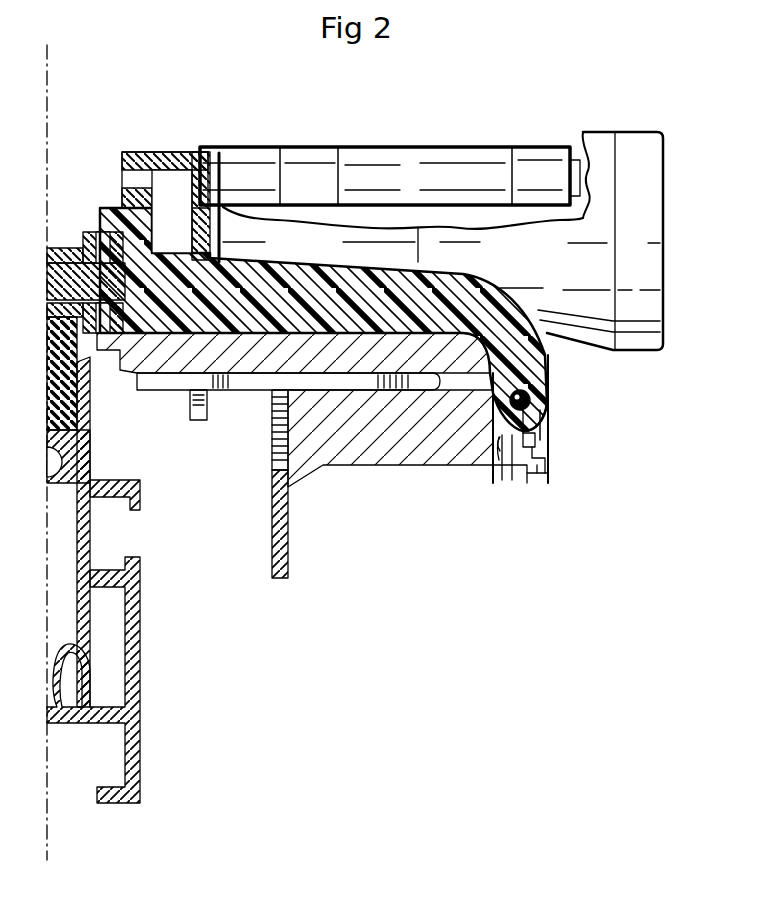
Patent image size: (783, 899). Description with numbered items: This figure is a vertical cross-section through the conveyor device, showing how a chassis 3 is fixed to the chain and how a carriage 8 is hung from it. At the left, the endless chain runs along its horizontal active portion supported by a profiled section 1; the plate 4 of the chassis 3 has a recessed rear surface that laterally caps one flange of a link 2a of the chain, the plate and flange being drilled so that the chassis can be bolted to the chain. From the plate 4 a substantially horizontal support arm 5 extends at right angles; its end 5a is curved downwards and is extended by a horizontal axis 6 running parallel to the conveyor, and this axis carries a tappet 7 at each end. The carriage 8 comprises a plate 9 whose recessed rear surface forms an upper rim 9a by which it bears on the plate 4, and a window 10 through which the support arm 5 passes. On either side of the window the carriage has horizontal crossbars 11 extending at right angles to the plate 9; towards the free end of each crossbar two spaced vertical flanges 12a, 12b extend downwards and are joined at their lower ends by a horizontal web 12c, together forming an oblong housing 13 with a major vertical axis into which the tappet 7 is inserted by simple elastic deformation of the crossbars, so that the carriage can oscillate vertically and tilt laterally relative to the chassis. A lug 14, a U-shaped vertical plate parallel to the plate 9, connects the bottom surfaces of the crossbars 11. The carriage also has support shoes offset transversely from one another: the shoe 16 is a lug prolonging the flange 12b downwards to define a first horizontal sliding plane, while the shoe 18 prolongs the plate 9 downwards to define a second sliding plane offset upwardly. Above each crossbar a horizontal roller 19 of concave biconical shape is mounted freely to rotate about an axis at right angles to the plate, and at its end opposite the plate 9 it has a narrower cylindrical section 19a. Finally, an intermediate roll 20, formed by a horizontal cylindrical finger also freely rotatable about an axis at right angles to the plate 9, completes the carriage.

The profiled section 1 is at (135, 615).
The link 2a is at (90, 237).
The chassis 3 is at (164, 239).
The plate 4 is at (96, 208).
The support arm 5 is at (348, 288).
The end of support arm 5a is at (548, 430).
The horizontal axis 6 is at (552, 423).
The tappet 7 is at (511, 450).
The carriage 8 is at (378, 463).
The plate 9 is at (216, 190).
The upper rim 9a is at (160, 152).
The window 10 is at (173, 391).
The crossbar 11 is at (437, 391).
The vertical flange 12a is at (493, 432).
The vertical flange 12b is at (553, 418).
The horizontal web 12c is at (553, 438).
The oblong housing 13 is at (525, 440).
The lug 14 is at (285, 580).
The second shoe 16 is at (543, 432).
The shoe 18 is at (199, 421).
The horizontal roller 19 is at (583, 308).
The cylindrical section 19a is at (646, 265).
The intermediate roll 20 is at (447, 180).